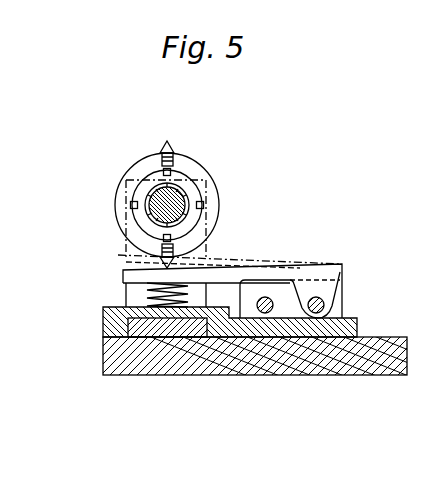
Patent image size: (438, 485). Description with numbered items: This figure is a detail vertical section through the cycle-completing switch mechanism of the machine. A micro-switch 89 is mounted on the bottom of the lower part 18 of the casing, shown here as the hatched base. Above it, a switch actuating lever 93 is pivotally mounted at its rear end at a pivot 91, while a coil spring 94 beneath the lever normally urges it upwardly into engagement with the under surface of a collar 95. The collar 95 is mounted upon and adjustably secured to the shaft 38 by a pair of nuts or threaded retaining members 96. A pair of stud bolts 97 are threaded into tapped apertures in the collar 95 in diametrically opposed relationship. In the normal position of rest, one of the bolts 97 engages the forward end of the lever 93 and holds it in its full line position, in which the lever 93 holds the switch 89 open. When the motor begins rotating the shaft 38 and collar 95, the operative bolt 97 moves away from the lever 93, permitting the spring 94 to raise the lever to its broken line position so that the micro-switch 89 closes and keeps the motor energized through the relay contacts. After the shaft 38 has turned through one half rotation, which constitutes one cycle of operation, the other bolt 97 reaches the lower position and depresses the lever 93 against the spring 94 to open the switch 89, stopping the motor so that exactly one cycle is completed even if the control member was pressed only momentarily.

The lower part of the casing 18 is at (207, 368).
The micro-switch 89 is at (293, 310).
The switch actuating lever 93 is at (244, 272).
The pivot 91 is at (324, 305).
The coil spring 94 is at (157, 290).
The collar 95 is at (118, 215).
The nuts or threaded retaining members 96 is at (186, 183).
The shaft 38 is at (152, 196).
The stud bolts 97 is at (165, 148).